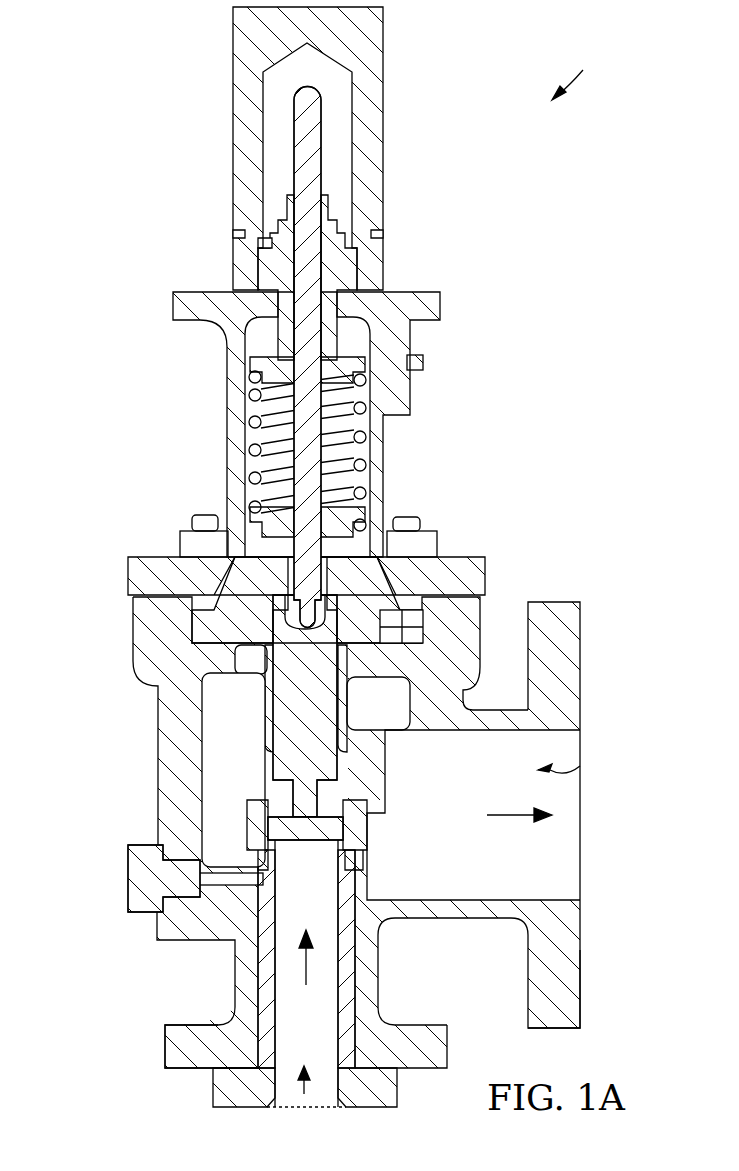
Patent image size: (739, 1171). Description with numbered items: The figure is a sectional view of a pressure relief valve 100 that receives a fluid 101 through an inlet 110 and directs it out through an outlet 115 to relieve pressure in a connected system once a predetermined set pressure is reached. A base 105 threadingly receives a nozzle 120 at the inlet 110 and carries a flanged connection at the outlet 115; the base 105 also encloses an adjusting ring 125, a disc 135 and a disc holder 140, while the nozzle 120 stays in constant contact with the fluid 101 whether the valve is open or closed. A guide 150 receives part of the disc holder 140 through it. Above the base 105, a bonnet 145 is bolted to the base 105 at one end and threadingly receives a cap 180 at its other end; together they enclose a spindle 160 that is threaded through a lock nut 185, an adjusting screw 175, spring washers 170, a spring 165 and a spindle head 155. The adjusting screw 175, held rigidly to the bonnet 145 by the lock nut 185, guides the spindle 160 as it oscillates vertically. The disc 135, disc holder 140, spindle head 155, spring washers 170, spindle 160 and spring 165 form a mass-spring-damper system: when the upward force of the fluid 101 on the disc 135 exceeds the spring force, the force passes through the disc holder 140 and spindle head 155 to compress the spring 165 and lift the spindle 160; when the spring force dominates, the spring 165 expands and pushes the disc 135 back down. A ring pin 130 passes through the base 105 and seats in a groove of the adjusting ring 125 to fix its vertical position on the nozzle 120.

The pressure relief valve 100 is at (578, 72).
The fluid 101 is at (310, 957).
The base 105 is at (165, 1045).
The inlet 110 is at (304, 1100).
The outlet 115 is at (580, 766).
The nozzle 120 is at (213, 1093).
The adjusting ring 125 is at (262, 860).
The ring pin 130 is at (130, 896).
The disc 135 is at (345, 824).
The disc holder 140 is at (338, 762).
The bonnet 145 is at (440, 303).
The guide 150 is at (200, 640).
The spindle head 155 is at (280, 574).
The spindle 160 is at (322, 152).
The spring 165 is at (256, 441).
The spring washers 170 is at (250, 362).
The adjusting screw 175 is at (337, 215).
The cap 180 is at (233, 62).
The lock nut 185 is at (266, 240).